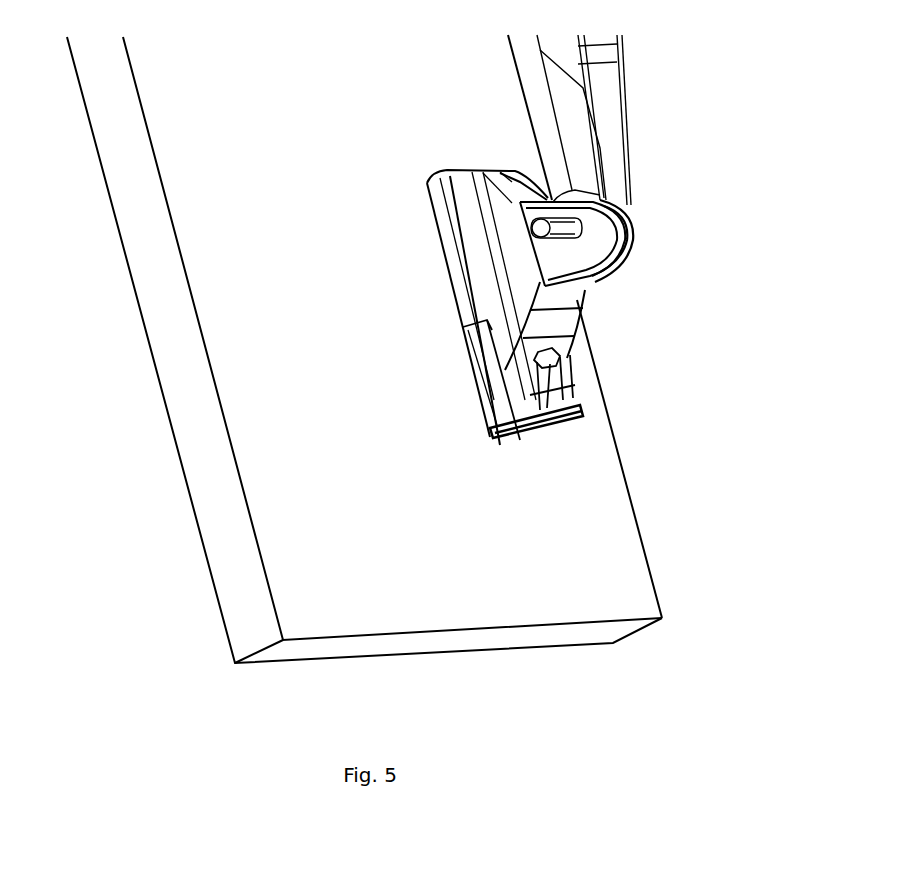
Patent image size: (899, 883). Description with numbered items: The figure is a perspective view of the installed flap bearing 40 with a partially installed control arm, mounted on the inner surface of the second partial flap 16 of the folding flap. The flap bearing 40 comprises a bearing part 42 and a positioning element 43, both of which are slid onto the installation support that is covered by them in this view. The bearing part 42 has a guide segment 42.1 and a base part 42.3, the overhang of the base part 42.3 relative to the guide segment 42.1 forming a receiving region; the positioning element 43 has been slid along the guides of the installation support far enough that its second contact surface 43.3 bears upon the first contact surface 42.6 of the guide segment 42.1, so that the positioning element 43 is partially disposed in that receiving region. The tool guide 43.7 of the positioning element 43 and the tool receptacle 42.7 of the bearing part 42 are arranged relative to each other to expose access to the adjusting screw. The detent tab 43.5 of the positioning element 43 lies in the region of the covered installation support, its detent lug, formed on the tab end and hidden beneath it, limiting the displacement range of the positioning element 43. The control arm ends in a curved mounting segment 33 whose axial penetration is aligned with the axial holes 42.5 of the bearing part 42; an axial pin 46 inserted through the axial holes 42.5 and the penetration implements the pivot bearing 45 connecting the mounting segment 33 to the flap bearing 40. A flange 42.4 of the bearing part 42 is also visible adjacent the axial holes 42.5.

The second partial flap 16 is at (613, 482).
The mounting segment 33 is at (603, 105).
The flap bearing 40 is at (751, 225).
The bearing part 42 is at (427, 195).
The guide segment 42.1 is at (440, 237).
The base part 42.3 is at (580, 322).
The bracket flange 42.4 is at (608, 267).
The axial holes 42.5 is at (610, 203).
The first contact surface 42.6 is at (468, 330).
The tool receptacle 42.7 is at (593, 355).
The positioning element 43 is at (487, 403).
The second contact surface 43.3 is at (462, 317).
The detent tab 43.5 is at (645, 364).
The tool guide 43.7 is at (545, 372).
The pivot bearing 45 is at (708, 129).
The axial pin 46 is at (623, 212).